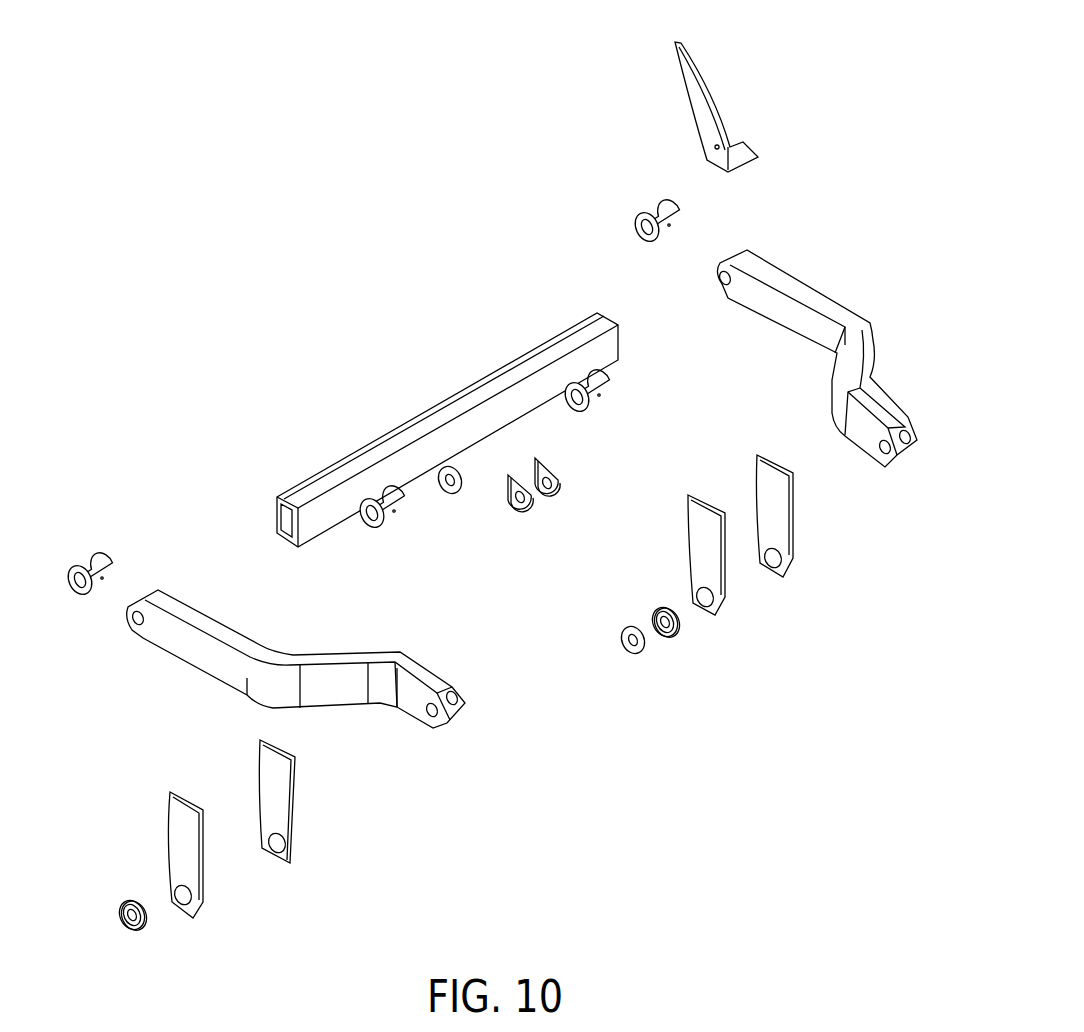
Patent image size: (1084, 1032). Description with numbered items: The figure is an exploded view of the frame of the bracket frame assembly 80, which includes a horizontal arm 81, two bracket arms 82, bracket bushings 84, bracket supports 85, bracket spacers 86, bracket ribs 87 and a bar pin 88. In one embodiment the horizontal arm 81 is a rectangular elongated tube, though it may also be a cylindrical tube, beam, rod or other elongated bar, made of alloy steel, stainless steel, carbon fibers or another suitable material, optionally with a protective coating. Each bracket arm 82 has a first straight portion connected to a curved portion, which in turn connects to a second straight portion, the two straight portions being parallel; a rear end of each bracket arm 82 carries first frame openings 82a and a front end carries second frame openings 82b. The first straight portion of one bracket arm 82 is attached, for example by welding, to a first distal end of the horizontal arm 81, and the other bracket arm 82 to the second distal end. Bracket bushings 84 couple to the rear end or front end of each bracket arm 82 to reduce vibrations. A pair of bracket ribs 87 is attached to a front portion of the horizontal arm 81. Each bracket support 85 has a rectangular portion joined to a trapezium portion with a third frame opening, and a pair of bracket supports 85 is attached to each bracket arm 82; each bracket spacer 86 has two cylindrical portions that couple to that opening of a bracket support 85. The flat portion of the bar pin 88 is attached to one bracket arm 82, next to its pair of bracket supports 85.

The bracket frame assembly 80 is at (872, 328).
The horizontal arm 81 is at (357, 465).
The bracket arm 82 is at (790, 280).
The first frame opening 82a is at (720, 277).
The second frame opening 82b is at (912, 440).
The bracket bushing 84 is at (662, 220).
The bracket support 85 is at (785, 562).
The bracket spacer 86 is at (453, 490).
The bracket rib 87 is at (522, 503).
The bar pin 88 is at (697, 63).